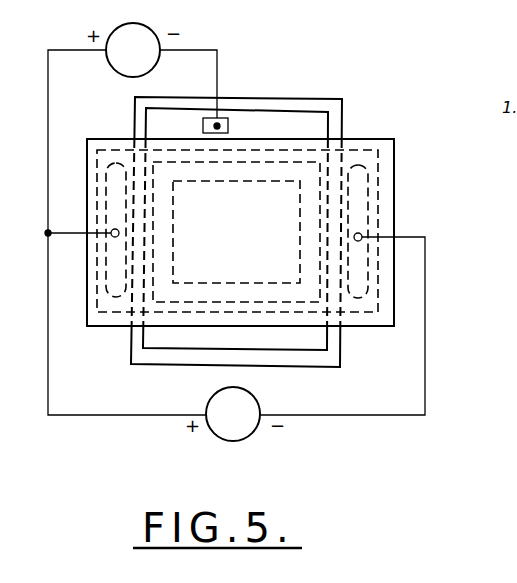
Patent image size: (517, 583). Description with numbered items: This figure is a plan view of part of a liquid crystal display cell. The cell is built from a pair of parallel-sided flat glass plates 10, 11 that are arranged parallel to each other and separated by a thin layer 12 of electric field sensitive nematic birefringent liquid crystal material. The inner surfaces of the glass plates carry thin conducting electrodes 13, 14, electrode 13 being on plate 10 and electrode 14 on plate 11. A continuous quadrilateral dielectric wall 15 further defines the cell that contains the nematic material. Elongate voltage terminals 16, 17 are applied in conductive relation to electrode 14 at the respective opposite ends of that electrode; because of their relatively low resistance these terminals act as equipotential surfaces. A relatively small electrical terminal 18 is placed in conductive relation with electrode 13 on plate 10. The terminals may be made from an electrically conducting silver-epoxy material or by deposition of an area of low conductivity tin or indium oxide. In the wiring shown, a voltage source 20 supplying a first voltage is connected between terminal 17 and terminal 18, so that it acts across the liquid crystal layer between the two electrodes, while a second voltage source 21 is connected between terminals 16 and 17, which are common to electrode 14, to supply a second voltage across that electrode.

The glass plate 10 is at (307, 106).
The glass plate 11 is at (395, 150).
The thin layer 12 is at (240, 197).
The conducting electrode 13 is at (338, 120).
The conducting electrode 14 is at (378, 158).
The dielectric wall 15 is at (310, 320).
The voltage terminal 16 is at (374, 200).
The voltage terminal 17 is at (108, 192).
The electrical terminal 18 is at (203, 126).
The voltage source 20 is at (114, 70).
The voltage source 21 is at (259, 398).